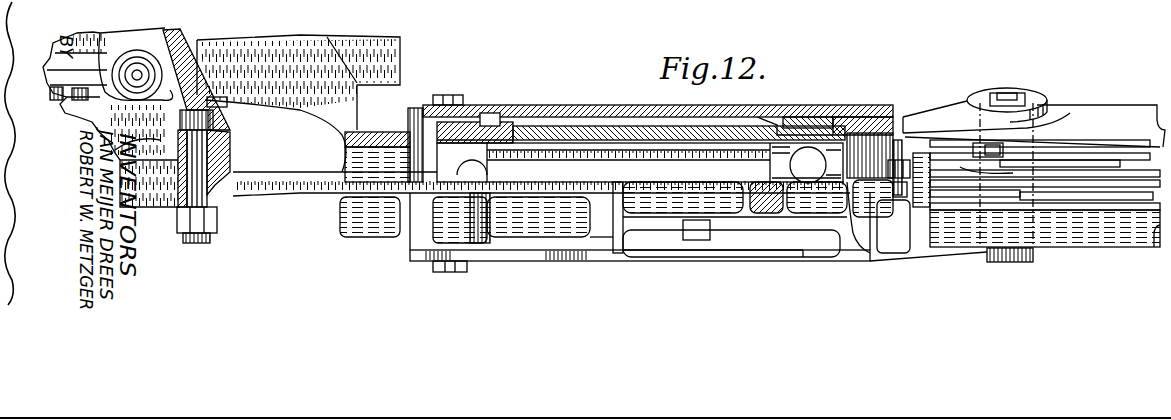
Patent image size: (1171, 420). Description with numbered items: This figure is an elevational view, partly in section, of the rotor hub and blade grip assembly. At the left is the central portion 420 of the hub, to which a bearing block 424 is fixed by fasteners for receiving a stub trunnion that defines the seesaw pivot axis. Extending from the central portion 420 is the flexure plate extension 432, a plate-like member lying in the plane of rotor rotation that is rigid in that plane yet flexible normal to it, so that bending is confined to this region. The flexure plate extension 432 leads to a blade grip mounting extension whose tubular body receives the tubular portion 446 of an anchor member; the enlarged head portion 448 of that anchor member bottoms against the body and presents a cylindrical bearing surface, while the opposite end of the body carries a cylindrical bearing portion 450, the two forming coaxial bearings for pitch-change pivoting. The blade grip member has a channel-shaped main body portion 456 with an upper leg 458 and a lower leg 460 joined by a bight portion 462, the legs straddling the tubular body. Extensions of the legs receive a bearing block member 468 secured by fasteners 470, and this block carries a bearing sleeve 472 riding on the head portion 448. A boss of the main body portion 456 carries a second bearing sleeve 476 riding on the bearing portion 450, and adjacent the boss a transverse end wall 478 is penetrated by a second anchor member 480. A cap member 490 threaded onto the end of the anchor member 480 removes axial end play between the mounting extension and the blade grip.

The central portion 420 is at (150, 193).
The bearing block 424 is at (148, 33).
The flexure plate extension 432 is at (297, 187).
The tubular portion 446 is at (510, 137).
The enlarged head portion 448 is at (487, 133).
The cylindrical bearing portion 450 is at (817, 133).
The main body portion 456 is at (810, 117).
The upper leg 458 is at (638, 105).
The lower leg 460 is at (647, 257).
The bight portion 462 is at (613, 200).
The bearing block member 468 is at (418, 108).
The fastener 470 is at (450, 95).
The bearing sleeve 472 is at (467, 122).
The bearing sleeve 476 is at (827, 117).
The transverse end wall 478 is at (873, 116).
The anchor member 480 is at (780, 140).
The cap member 490 is at (910, 114).